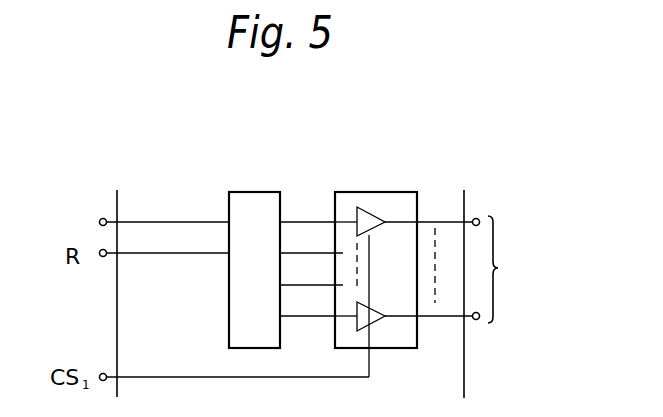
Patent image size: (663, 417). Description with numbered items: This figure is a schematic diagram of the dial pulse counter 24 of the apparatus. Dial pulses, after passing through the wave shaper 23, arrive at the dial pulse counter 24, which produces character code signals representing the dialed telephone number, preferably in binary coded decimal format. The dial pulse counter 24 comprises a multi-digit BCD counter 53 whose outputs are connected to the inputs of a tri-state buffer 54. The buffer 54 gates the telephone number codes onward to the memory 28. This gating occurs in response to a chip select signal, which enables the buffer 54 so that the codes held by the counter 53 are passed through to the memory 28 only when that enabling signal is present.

The wave shaper 23 is at (143, 222).
The dial pulse counter 24 is at (479, 279).
The memory 28 is at (512, 269).
The multi-digit BCD counter 53 is at (286, 244).
The tri-state buffer 54 is at (376, 244).